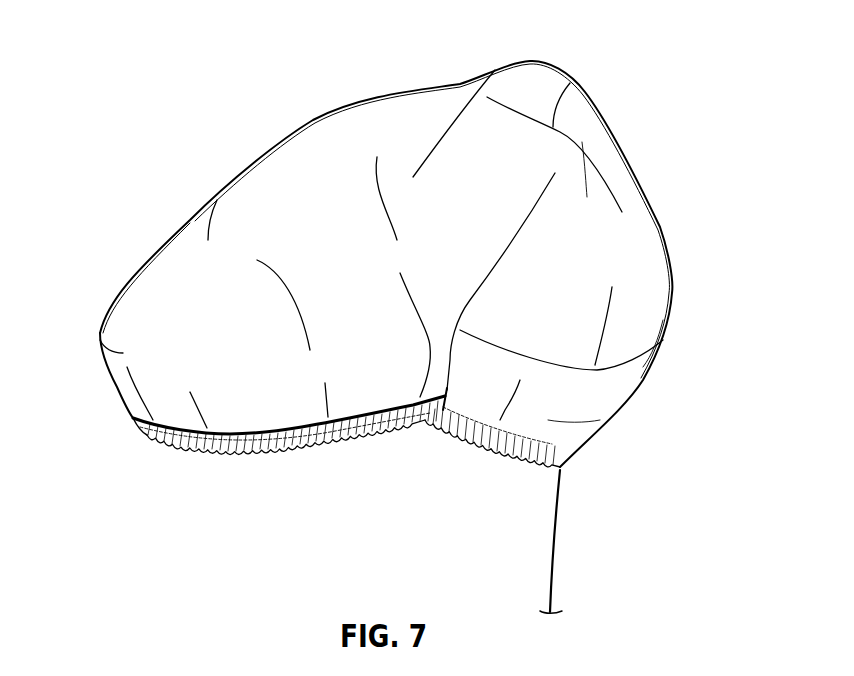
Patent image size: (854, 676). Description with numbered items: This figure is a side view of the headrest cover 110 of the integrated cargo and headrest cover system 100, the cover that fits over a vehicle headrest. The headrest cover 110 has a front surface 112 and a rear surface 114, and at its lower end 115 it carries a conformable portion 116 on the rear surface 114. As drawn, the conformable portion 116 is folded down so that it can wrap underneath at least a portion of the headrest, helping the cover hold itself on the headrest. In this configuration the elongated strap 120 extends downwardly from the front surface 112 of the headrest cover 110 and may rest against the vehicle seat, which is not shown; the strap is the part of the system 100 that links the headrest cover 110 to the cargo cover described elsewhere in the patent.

The integrated cargo and headrest cover system 100 is at (166, 40).
The headrest cover 110 is at (309, 115).
The front surface 112 is at (650, 200).
The rear surface 114 is at (140, 267).
The lower end 115 is at (186, 464).
The conformable portion 116 is at (285, 450).
The elongated strap 120 is at (557, 565).